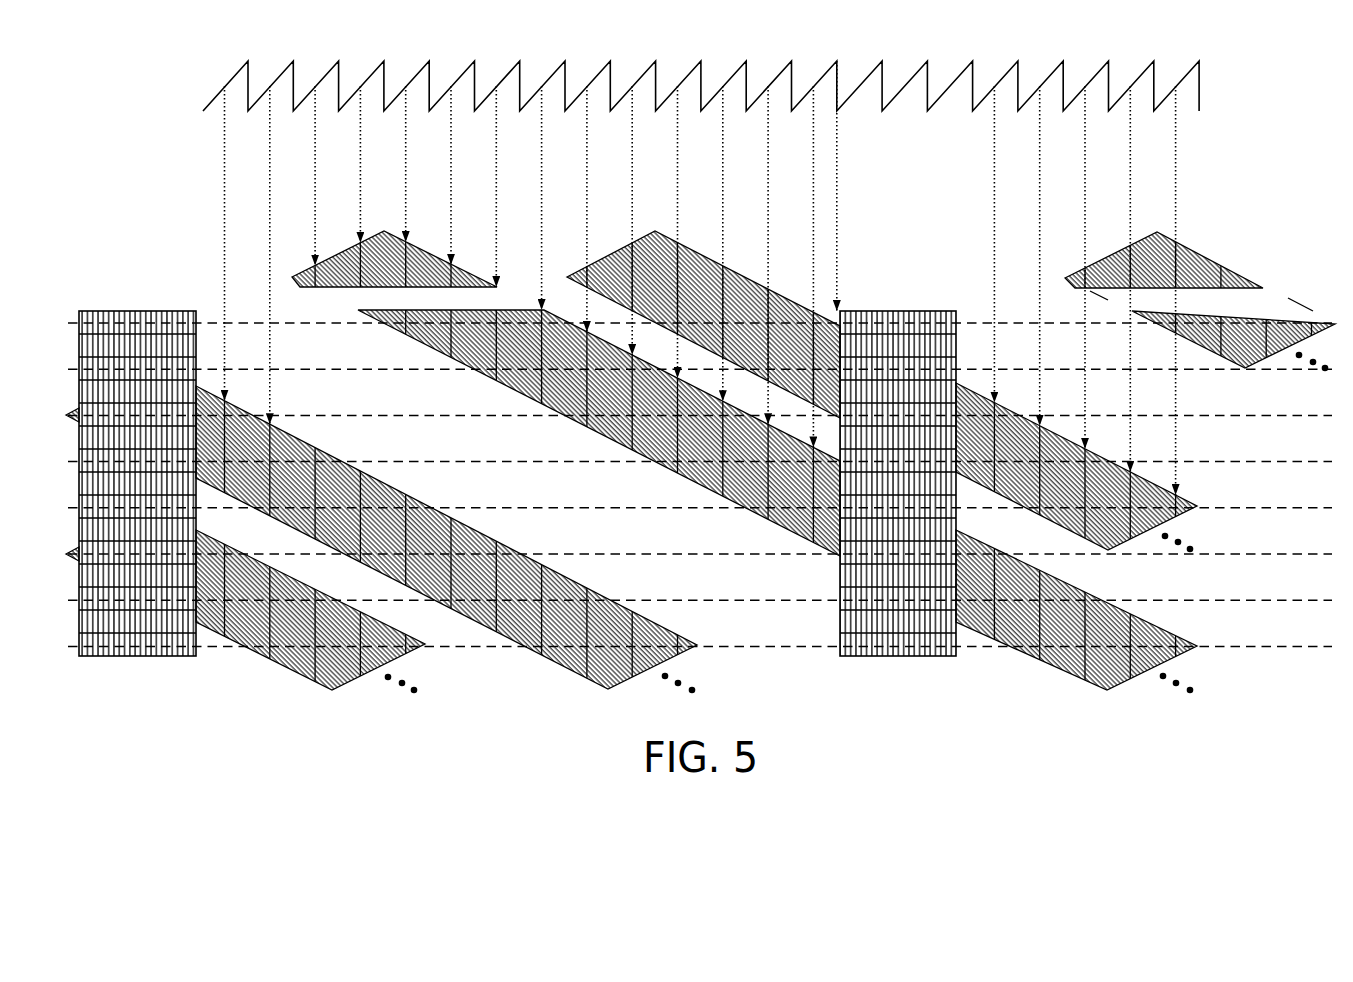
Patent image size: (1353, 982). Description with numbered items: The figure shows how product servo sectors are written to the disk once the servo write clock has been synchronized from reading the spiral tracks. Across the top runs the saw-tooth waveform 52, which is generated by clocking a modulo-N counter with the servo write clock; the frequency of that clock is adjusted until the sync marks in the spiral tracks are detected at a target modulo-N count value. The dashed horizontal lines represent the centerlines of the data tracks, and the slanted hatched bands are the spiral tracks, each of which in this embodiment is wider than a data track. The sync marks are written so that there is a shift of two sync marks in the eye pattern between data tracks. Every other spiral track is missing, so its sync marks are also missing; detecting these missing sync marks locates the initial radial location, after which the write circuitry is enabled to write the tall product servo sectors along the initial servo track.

The saw-tooth waveform 52 is at (233, 78).